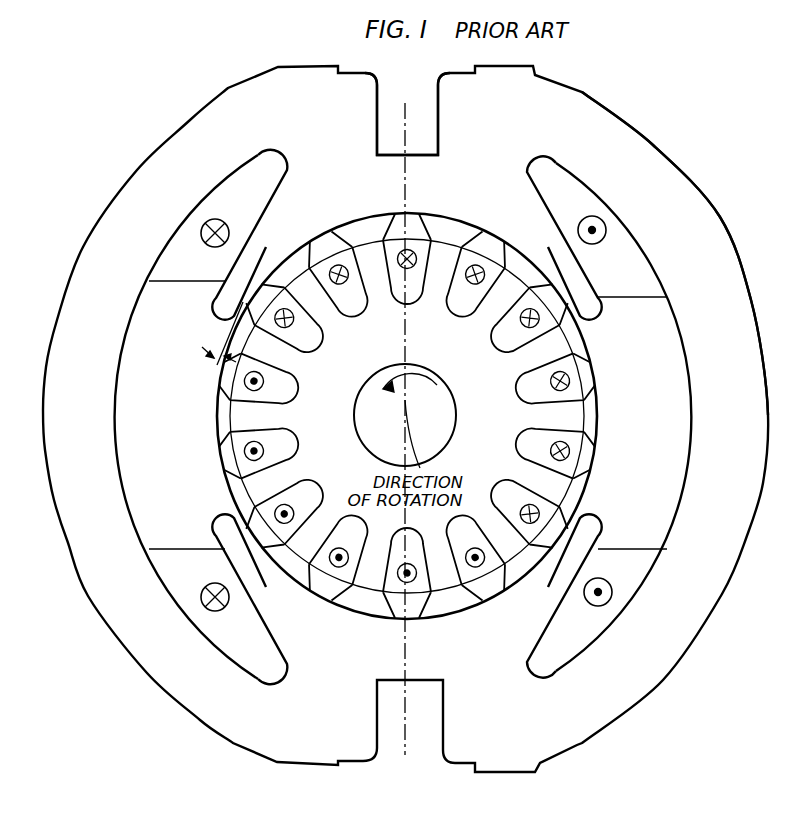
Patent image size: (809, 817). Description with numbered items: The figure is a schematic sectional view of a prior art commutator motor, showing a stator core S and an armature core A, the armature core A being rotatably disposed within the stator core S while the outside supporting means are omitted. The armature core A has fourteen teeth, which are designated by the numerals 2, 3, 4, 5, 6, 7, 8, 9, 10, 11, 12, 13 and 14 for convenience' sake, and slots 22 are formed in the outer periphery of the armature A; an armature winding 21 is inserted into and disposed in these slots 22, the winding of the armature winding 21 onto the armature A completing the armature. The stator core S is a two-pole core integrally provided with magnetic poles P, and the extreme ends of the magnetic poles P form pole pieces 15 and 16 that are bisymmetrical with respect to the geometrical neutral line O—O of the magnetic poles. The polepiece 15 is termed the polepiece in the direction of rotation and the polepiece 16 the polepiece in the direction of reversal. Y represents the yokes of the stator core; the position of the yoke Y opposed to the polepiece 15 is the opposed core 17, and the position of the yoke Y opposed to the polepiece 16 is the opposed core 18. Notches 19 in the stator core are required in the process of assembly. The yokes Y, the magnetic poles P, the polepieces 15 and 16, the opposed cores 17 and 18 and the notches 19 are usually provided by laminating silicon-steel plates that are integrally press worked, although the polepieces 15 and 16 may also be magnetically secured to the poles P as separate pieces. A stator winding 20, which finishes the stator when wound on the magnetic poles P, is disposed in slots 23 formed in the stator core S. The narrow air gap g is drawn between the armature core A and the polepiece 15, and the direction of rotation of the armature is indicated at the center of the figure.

The tooth 2 is at (339, 275).
The tooth 3 is at (400, 259).
The tooth 4 is at (473, 275).
The tooth 5 is at (528, 320).
The tooth 6 is at (570, 375).
The tooth 7 is at (571, 444).
The tooth 8 is at (528, 512).
The tooth 9 is at (474, 556).
The tooth 10 is at (416, 573).
The tooth 11 is at (340, 556).
The tooth 12 is at (287, 512).
The tooth 13 is at (259, 450).
The tooth 14 is at (259, 386).
The polepiece in the direction of rotation 15 is at (265, 237).
The polepiece in the direction of reversal 16 is at (557, 257).
The opposed core 17 is at (190, 124).
The opposed core 18 is at (648, 153).
The notches 19 is at (418, 123).
The stator winding 20 is at (603, 242).
The armature winding 21 is at (562, 381).
The slots 22 is at (562, 453).
The slots 23 is at (183, 240).
The armature core A is at (310, 398).
The air gap g is at (220, 333).
The magnetic poles P is at (432, 190).
The yokes Y is at (84, 489).
The stator core S is at (95, 572).
The geometrical neutral line O is at (405, 428).